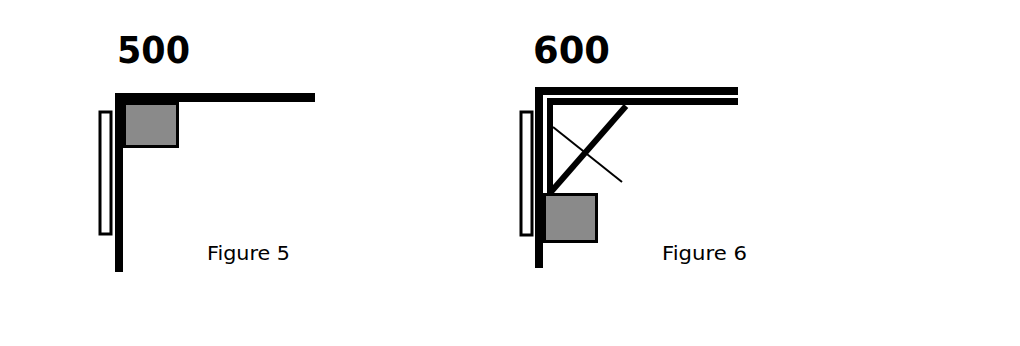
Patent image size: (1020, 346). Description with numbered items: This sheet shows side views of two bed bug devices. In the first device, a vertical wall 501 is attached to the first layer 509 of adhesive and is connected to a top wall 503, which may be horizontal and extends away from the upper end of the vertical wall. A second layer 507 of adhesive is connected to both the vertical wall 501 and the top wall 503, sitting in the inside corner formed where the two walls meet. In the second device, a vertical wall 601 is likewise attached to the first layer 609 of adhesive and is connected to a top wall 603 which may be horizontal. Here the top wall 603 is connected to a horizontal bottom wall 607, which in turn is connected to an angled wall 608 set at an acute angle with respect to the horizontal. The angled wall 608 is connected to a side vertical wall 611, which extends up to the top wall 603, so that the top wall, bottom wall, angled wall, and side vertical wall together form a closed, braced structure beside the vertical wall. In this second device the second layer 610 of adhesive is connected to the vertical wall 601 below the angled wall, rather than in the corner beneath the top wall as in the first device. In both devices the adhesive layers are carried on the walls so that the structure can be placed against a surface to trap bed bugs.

In FIG. 5, the vertical wall 501 is at (113, 252).
In FIG. 5, the top wall 503 is at (232, 94).
In FIG. 5, the second layer of adhesive 507 is at (162, 134).
In FIG. 5, the first layer of adhesive 509 is at (93, 172).
In FIG. 6, the vertical wall 601 is at (537, 250).
In FIG. 6, the top wall 603 is at (658, 88).
In FIG. 6, the horizontal bottom wall 607 is at (707, 104).
In FIG. 6, the angled wall 608 is at (613, 110).
In FIG. 6, the first layer of adhesive 609 is at (513, 172).
In FIG. 6, the second layer of adhesive 610 is at (580, 222).
In FIG. 6, the side vertical wall 611 is at (605, 173).